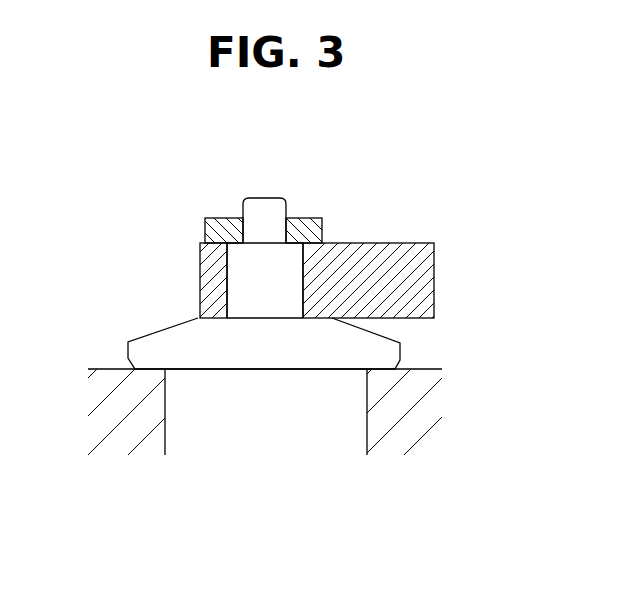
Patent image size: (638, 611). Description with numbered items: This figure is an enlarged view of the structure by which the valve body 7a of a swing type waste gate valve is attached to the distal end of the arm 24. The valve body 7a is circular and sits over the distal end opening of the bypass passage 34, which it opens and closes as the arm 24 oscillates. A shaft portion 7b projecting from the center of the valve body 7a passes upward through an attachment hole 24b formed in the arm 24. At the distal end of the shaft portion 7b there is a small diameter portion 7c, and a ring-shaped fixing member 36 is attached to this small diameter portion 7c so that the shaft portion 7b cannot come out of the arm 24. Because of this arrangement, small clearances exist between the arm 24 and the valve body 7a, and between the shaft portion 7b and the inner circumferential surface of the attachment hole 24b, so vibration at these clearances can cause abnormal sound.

The ring-shaped fixing member 36 is at (222, 232).
The small diameter portion 7c is at (260, 205).
The shaft portion 7b is at (283, 279).
The arm 24 is at (425, 280).
The attachment hole 24b is at (227, 288).
The valve body 7a is at (320, 360).
The bypass passage 34 is at (203, 430).